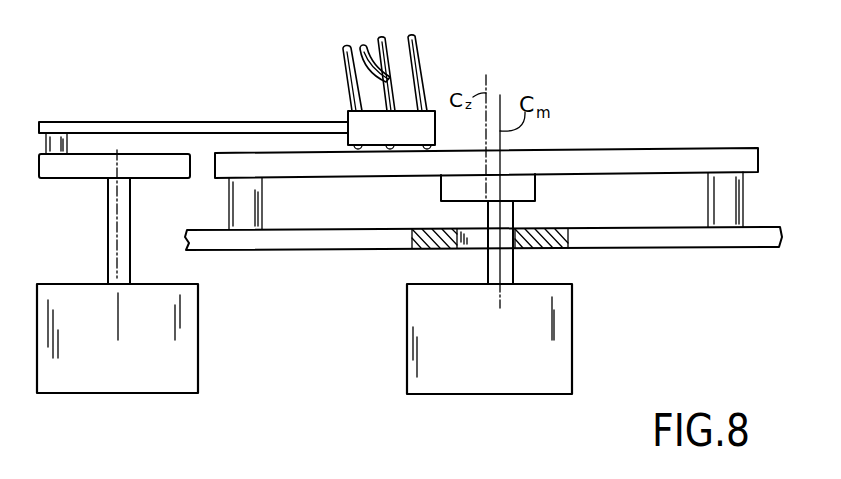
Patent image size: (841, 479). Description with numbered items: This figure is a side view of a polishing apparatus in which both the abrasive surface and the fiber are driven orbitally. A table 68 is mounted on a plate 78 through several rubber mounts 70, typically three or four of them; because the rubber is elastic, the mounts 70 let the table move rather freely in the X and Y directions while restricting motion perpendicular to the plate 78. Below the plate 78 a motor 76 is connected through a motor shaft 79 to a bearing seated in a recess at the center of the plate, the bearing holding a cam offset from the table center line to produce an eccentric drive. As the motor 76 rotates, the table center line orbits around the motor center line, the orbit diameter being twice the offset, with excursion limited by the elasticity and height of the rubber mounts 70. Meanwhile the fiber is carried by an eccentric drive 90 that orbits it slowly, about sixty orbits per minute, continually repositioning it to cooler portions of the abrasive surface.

The table 68 is at (760, 158).
The rubber mounts 70 is at (744, 197).
The plate 78 is at (782, 232).
The motor shaft 79 is at (488, 262).
The motor 76 is at (572, 293).
The eccentric drive 90 is at (218, 290).